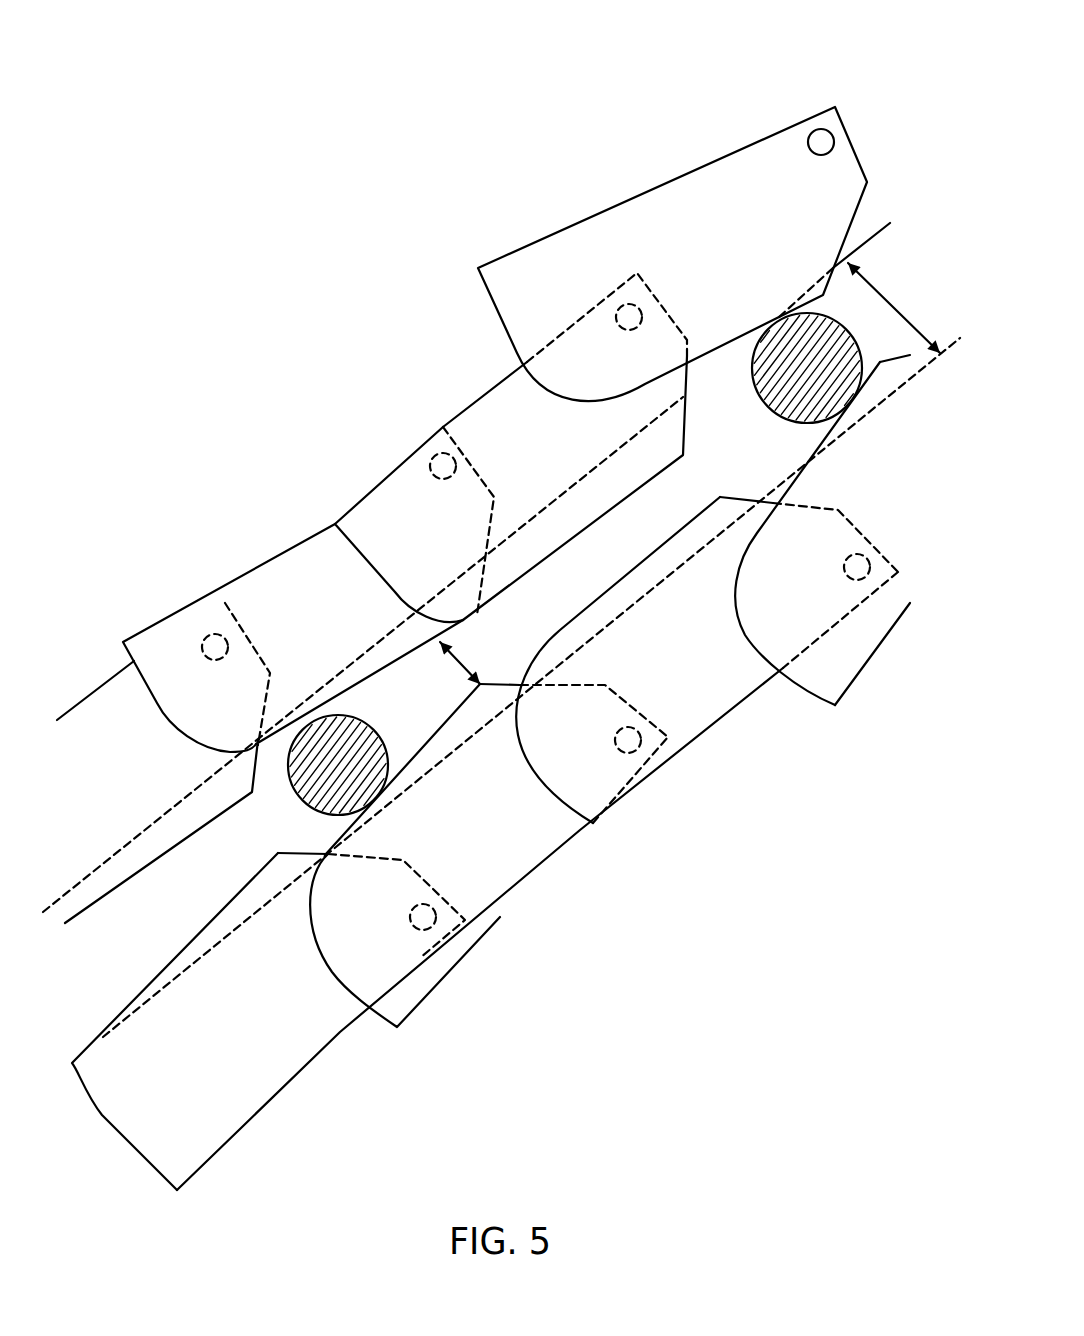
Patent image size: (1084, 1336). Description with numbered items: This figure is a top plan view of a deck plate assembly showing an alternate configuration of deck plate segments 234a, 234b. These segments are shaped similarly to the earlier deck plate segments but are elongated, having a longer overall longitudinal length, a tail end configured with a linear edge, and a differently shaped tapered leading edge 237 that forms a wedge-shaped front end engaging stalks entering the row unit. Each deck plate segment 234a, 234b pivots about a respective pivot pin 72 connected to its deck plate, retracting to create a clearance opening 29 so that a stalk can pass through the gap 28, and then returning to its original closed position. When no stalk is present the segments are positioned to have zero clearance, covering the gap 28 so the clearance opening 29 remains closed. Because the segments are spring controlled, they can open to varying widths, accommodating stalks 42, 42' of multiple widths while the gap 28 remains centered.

The gap 28 is at (898, 304).
The clearance opening 29 is at (464, 657).
The stalk 42 is at (508, 764).
The stalk 42' is at (481, 528).
The pivot pin 72 is at (821, 130).
The deck plate segment 234a is at (720, 207).
The deck plate segment 234b is at (703, 692).
The tapered leading edge 237 is at (688, 393).